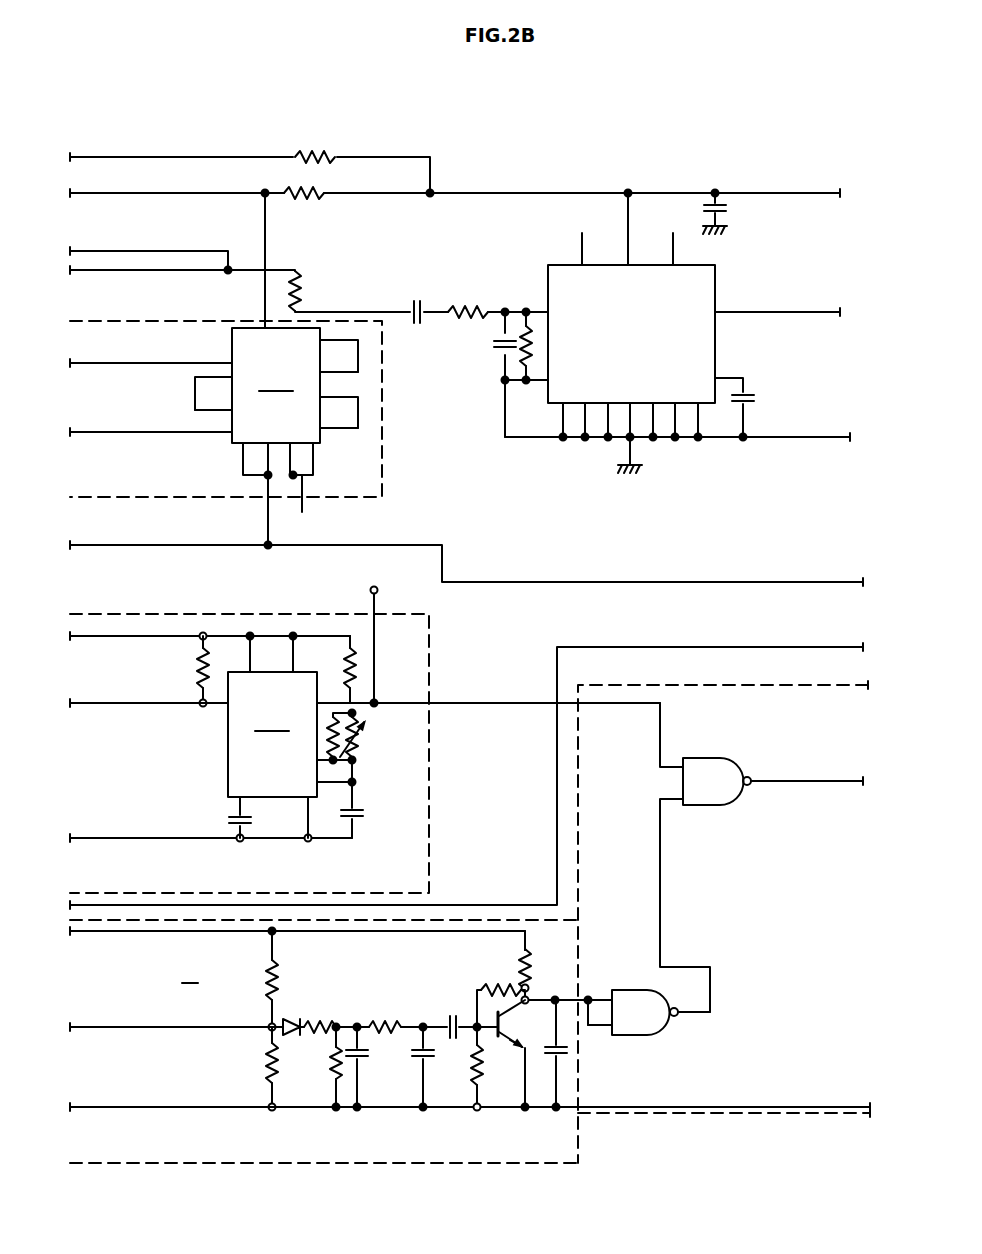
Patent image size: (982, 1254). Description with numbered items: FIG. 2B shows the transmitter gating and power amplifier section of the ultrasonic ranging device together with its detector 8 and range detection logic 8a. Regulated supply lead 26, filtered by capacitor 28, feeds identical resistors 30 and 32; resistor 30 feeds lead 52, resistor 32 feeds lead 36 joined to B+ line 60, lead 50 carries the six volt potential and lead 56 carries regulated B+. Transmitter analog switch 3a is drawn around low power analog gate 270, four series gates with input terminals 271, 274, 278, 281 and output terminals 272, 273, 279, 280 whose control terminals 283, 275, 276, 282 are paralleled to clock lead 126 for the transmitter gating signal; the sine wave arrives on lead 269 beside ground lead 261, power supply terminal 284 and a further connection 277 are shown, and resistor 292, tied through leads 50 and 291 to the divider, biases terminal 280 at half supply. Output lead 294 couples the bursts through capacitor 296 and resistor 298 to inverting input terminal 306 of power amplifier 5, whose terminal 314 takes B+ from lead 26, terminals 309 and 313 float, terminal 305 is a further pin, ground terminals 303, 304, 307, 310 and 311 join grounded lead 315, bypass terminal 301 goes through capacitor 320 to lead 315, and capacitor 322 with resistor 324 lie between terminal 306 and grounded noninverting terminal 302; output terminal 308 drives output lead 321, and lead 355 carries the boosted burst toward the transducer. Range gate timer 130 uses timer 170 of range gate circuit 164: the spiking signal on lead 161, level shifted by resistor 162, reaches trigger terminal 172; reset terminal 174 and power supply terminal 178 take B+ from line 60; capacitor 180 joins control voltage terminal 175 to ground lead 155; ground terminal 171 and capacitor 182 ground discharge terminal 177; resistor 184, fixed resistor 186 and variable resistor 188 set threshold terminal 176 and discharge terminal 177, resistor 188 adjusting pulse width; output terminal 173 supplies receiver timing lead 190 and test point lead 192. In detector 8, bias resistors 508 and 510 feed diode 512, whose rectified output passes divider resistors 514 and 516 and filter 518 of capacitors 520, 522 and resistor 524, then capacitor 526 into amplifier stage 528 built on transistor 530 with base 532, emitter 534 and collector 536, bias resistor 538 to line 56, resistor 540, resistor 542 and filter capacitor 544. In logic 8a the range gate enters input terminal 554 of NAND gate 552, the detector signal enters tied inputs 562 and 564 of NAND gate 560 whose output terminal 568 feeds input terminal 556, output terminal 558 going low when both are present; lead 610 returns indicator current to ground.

The lead 52 is at (200, 155).
The resistor 30 is at (300, 150).
The lead 36 is at (165, 191).
The resistor 32 is at (304, 198).
The lead 26 is at (790, 190).
The lead 50 is at (130, 250).
The lead 291 is at (115, 272).
The power supply terminal 284 is at (262, 300).
The output terminal 280 is at (268, 316).
The resistor 292 is at (300, 285).
The output lead 294 is at (325, 312).
The capacitor 296 is at (410, 300).
The resistor 298 is at (471, 300).
The inverting input terminal 306 is at (527, 310).
The capacitor 322 is at (495, 350).
The resistor 324 is at (510, 372).
The noninverting input terminal 302 is at (505, 410).
The power amplifier 5 is at (722, 266).
The terminal 309 is at (580, 245).
The terminal 314 is at (625, 240).
The terminal 313 is at (672, 245).
The capacitor 28 is at (735, 215).
The output terminal 308 is at (735, 310).
The output lead 321 is at (815, 310).
The bypass terminal 301 is at (725, 375).
The capacitor 320 is at (760, 395).
The grounded lead 315 is at (830, 435).
The ground terminal 303 is at (555, 440).
The ground terminal 304 is at (580, 440).
The terminal 305 is at (606, 440).
The ground terminal 307 is at (648, 457).
The ground terminal 310 is at (668, 440).
The ground terminal 311 is at (679, 440).
The transmitter analog switch 3a is at (358, 497).
The low power analog gate 270 is at (276, 385).
The input terminal 281 is at (350, 345).
The output terminal 279 is at (360, 366).
The input terminal 278 is at (360, 405).
The output terminal 273 is at (355, 440).
The output terminal 272 is at (200, 378).
The input terminal 274 is at (200, 408).
The input terminal 271 is at (205, 361).
The lead 269 is at (130, 361).
The input line 277 is at (215, 436).
The ground lead 261 is at (130, 434).
The control terminal 283 is at (255, 462).
The control terminal 282 is at (315, 460).
The control terminal 275 is at (255, 480).
The control terminal 276 is at (309, 504).
The clock lead 126 is at (135, 547).
The range gating portion 130 is at (150, 614).
The B+ supply line 60 is at (105, 640).
The resistor 162 is at (198, 674).
The lead 161 is at (110, 706).
The trigger terminal 172 is at (212, 708).
The integrated circuit timer 170 is at (272, 734).
The reset terminal 174 is at (245, 638).
The power supply terminal 178 is at (290, 638).
The output terminal 173 is at (335, 700).
The resistor 184 is at (352, 645).
The test point lead 192 is at (380, 590).
The receiver timing lead 190 is at (485, 700).
The range gate circuit 164 is at (226, 771).
The fixed resistor 186 is at (352, 723).
The variable resistor 188 is at (360, 740).
The threshold terminal 176 is at (355, 770).
The discharge terminal 177 is at (355, 785).
The capacitor 182 is at (358, 818).
The circuit ground lead 155 is at (108, 835).
The control voltage terminal 175 is at (235, 807).
The capacitor 180 is at (232, 822).
The ground terminal 171 is at (305, 827).
The lead 355 is at (625, 645).
The range detection logic circuit 8a is at (740, 685).
The detector 8 is at (324, 1041).
The input terminal 554 is at (665, 719).
The NAND gate 552 is at (730, 757).
The output terminal 558 is at (795, 785).
The input terminal 556 is at (675, 805).
The NAND gate 560 is at (660, 1030).
The input terminal 562 is at (600, 1000).
The input terminal 564 is at (597, 1027).
The output terminal 568 is at (703, 1015).
The power supply lead 56 is at (120, 933).
The collector 536 is at (527, 985).
The bias resistor 538 is at (530, 950).
The amplifier stage 528 is at (537, 953).
The resistor 540 is at (498, 986).
The base 532 is at (480, 1008).
The input bias resistor 508 is at (270, 985).
The input bias resistor 510 is at (270, 1065).
The diode 512 is at (290, 1020).
The resistor 514 is at (322, 1020).
The resistor 516 is at (330, 1065).
The capacitor 520 is at (365, 1050).
The resistor 524 is at (390, 1020).
The capacitor 522 is at (428, 1060).
The capacitor 526 is at (437, 1015).
The filter 518 is at (388, 1108).
The resistor 542 is at (490, 1086).
The transistor 530 is at (513, 1055).
The emitter 534 is at (512, 1050).
The filter capacitor 544 is at (565, 1053).
The lead 610 is at (808, 1103).